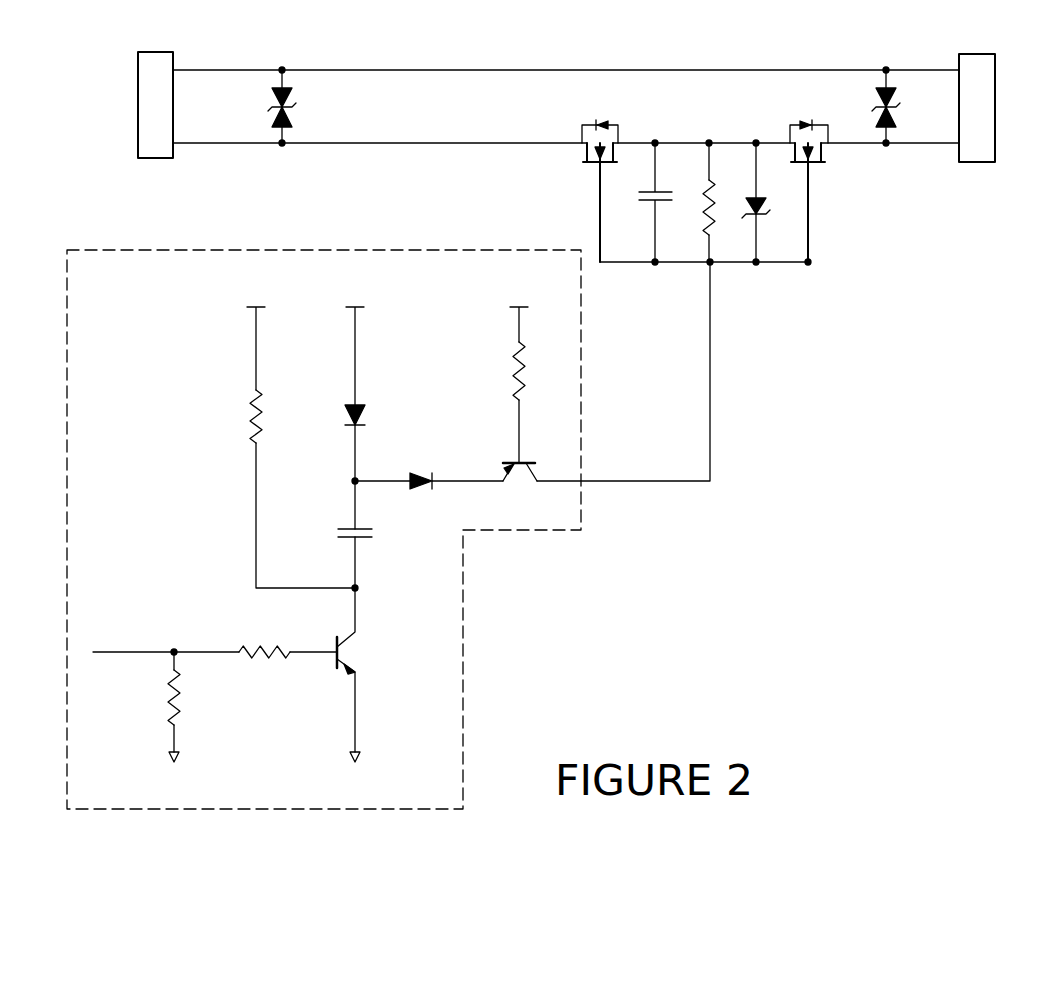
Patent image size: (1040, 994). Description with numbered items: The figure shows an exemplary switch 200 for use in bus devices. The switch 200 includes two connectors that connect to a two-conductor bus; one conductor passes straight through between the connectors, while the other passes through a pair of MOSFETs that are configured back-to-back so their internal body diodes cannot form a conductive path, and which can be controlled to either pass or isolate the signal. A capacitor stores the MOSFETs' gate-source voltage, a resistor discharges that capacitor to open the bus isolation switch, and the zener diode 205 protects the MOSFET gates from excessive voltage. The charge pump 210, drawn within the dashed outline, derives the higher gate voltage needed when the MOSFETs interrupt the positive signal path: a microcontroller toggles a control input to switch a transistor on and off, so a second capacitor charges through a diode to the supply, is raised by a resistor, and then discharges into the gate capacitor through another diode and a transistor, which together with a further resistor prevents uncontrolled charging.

The switch 200 is at (531, 420).
The zener diode 205 is at (764, 212).
The charge pump 210 is at (463, 624).